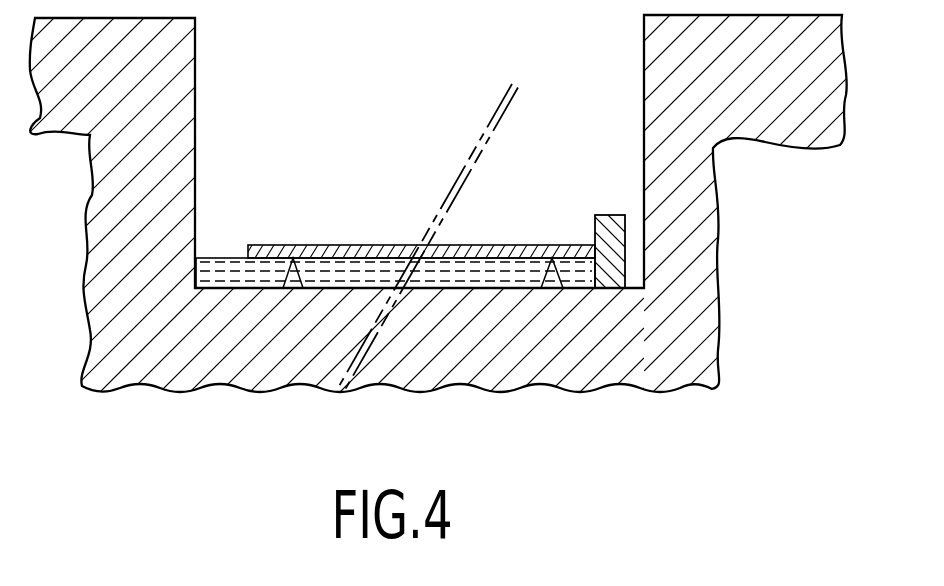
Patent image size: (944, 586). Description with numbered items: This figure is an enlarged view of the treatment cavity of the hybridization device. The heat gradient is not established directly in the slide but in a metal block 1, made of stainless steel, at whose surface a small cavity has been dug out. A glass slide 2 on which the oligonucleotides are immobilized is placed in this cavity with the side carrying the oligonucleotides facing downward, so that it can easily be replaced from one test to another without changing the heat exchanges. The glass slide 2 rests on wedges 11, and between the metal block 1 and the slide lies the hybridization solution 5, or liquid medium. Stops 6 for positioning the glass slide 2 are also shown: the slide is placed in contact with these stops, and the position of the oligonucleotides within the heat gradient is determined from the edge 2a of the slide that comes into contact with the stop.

The metal block 1 is at (776, 114).
The glass slide 2 is at (351, 244).
The edge of the slide 2a is at (592, 245).
The hybridization solution 5 is at (483, 275).
The stops 6 is at (614, 215).
The wedges 11 is at (285, 288).